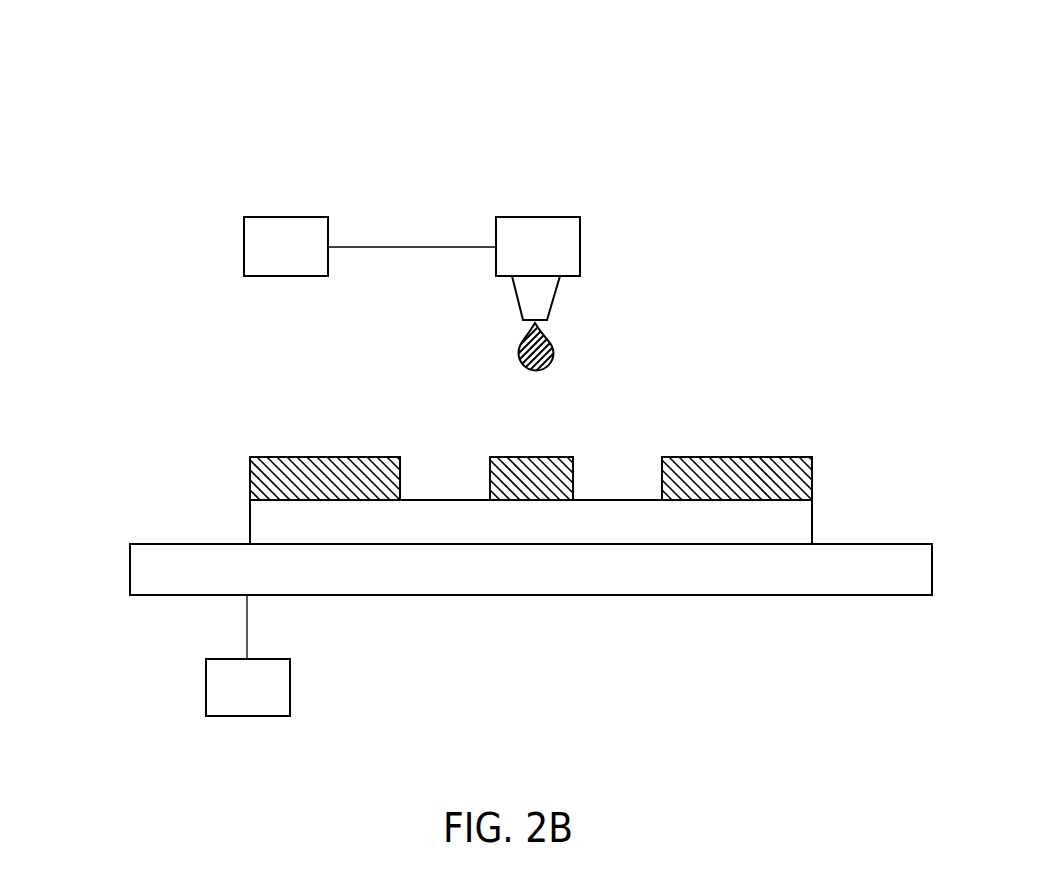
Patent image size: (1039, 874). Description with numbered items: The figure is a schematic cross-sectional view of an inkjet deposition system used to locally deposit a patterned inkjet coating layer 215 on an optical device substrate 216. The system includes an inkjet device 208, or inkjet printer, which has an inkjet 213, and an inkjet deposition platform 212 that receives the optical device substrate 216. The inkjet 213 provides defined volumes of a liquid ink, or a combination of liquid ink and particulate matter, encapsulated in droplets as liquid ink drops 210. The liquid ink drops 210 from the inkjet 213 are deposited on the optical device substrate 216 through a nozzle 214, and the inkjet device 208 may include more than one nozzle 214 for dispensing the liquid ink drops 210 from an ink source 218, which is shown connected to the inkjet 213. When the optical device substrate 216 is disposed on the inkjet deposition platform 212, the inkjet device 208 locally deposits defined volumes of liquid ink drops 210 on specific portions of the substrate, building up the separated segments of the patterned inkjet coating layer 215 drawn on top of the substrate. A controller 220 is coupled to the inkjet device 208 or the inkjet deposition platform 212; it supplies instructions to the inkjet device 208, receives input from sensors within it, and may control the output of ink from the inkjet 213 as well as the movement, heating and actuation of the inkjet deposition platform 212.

The inkjet device 208 is at (106, 73).
The liquid ink drops 210 is at (517, 357).
The inkjet deposition platform 212 is at (555, 586).
The inkjet 213 is at (564, 262).
The nozzle 214 is at (542, 308).
The patterned inkjet coating layer 215 is at (813, 468).
The optical device substrate 216 is at (813, 522).
The ink source 218 is at (312, 262).
The controller 220 is at (274, 705).